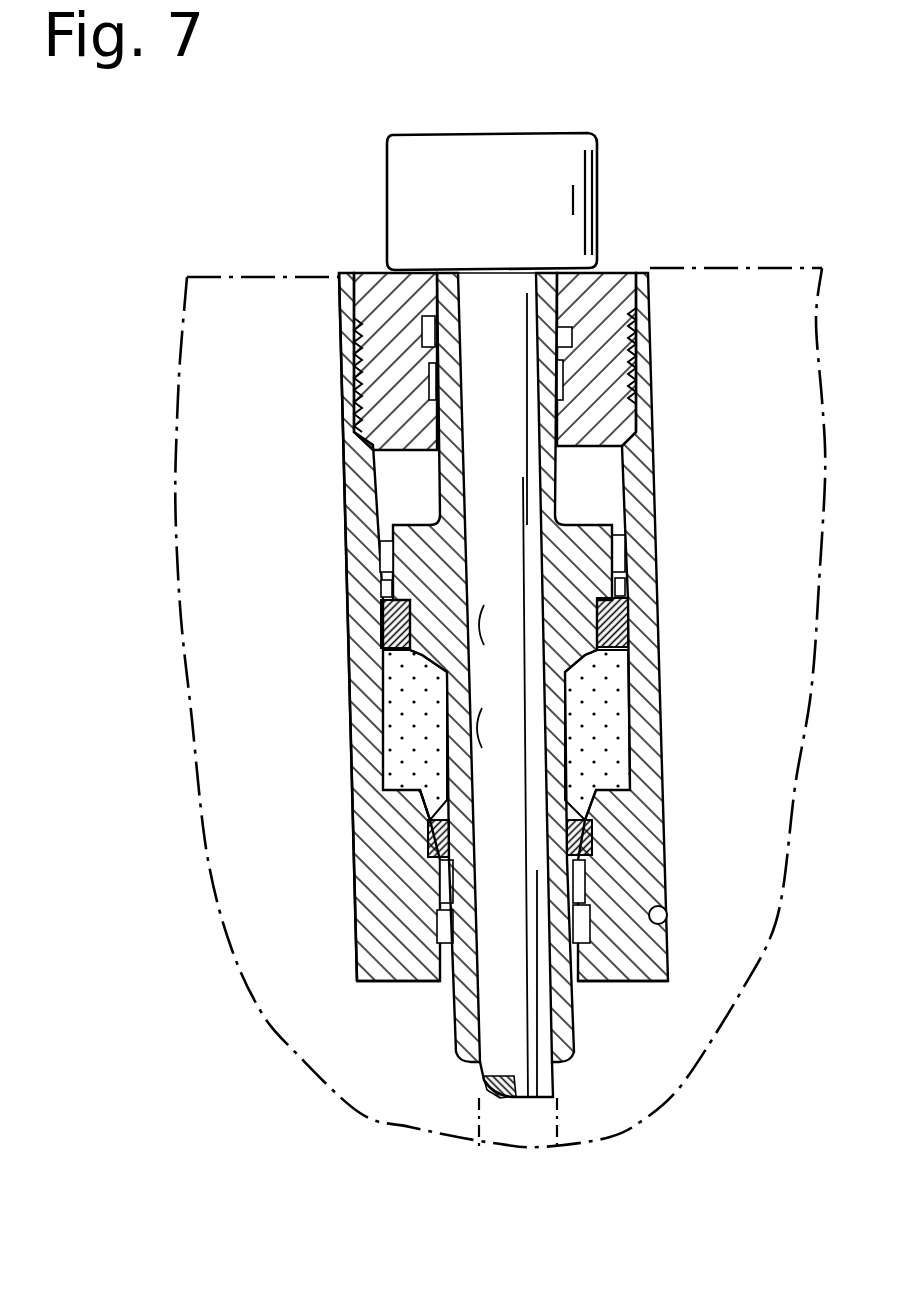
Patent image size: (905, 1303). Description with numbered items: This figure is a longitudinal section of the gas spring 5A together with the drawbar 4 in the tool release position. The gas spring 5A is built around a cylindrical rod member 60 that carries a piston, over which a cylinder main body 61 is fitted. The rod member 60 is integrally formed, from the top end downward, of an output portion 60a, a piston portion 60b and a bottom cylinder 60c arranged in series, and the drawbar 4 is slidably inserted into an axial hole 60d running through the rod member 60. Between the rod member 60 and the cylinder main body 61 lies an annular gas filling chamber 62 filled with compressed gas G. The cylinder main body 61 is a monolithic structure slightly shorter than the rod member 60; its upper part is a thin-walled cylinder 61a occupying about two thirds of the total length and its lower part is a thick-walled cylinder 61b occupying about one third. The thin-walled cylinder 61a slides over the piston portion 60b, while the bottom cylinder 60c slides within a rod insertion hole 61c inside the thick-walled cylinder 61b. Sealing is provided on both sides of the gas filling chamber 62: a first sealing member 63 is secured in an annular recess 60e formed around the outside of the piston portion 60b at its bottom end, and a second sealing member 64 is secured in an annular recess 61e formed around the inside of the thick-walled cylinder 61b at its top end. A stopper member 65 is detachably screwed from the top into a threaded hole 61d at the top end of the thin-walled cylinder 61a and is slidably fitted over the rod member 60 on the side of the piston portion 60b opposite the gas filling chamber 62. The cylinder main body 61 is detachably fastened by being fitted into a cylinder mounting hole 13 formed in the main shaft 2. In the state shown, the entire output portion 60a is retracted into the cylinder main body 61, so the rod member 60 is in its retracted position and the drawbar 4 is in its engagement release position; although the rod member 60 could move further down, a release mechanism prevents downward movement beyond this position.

The main shaft 2 is at (272, 272).
The gas spring 5A is at (236, 413).
The drawbar 4 is at (538, 1058).
The cylinder mounting hole 13 is at (668, 918).
The rod member 60 is at (559, 329).
The output portion 60a is at (452, 276).
The piston portion 60b is at (380, 601).
The bottom cylinder 60c is at (383, 791).
The axial hole 60d is at (445, 732).
The annular recess 60e is at (409, 630).
The cylinder main body 61 is at (656, 633).
The thin-walled cylinder 61a is at (348, 465).
The thick-walled cylinder 61b is at (374, 916).
The rod insertion hole 61c is at (400, 982).
The threaded hole 61d is at (354, 368).
The annular recess 61e is at (430, 845).
The gas filling chamber 62 is at (640, 684).
The first sealing member 63 is at (630, 597).
The second sealing member 64 is at (593, 828).
The stopper member 65 is at (642, 342).
The compressed gas G is at (612, 719).